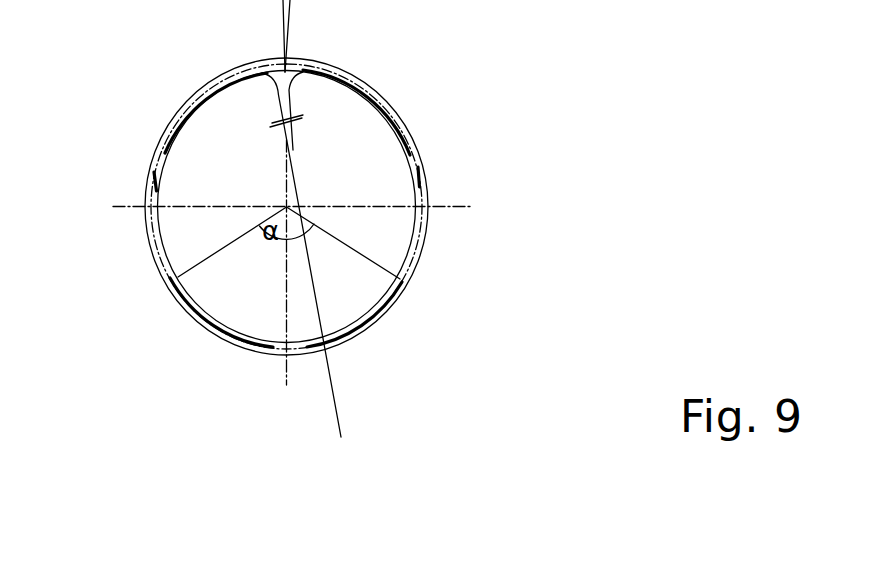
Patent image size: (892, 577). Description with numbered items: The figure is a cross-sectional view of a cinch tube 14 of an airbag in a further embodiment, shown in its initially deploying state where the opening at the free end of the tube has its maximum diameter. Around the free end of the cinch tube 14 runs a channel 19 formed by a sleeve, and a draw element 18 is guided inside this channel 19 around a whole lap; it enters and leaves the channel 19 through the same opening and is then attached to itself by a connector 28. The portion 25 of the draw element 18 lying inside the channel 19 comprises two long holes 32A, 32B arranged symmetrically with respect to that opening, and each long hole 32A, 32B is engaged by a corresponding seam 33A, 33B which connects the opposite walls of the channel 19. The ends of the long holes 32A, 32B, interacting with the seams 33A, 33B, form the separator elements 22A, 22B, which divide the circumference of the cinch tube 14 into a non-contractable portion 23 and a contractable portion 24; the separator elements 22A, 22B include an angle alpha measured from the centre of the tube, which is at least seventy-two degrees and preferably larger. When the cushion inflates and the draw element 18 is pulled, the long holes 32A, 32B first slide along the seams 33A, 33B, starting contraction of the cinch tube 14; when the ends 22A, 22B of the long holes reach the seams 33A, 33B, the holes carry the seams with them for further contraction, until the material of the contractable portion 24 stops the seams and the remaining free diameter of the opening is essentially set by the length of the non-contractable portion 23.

The cinch tube 14 is at (440, 232).
The draw element 18 is at (308, 248).
The channel 19 is at (155, 245).
The separator element 22A is at (178, 272).
The separator element 22B is at (405, 280).
The non-contractable portion 23 is at (358, 333).
The contractable portion 24 is at (170, 122).
The portion of the draw element inside the channel 25 is at (220, 330).
The connector 28 is at (290, 122).
The long hole 32A is at (153, 237).
The long hole 32B is at (412, 245).
The seam 33A is at (158, 175).
The seam 33B is at (425, 172).